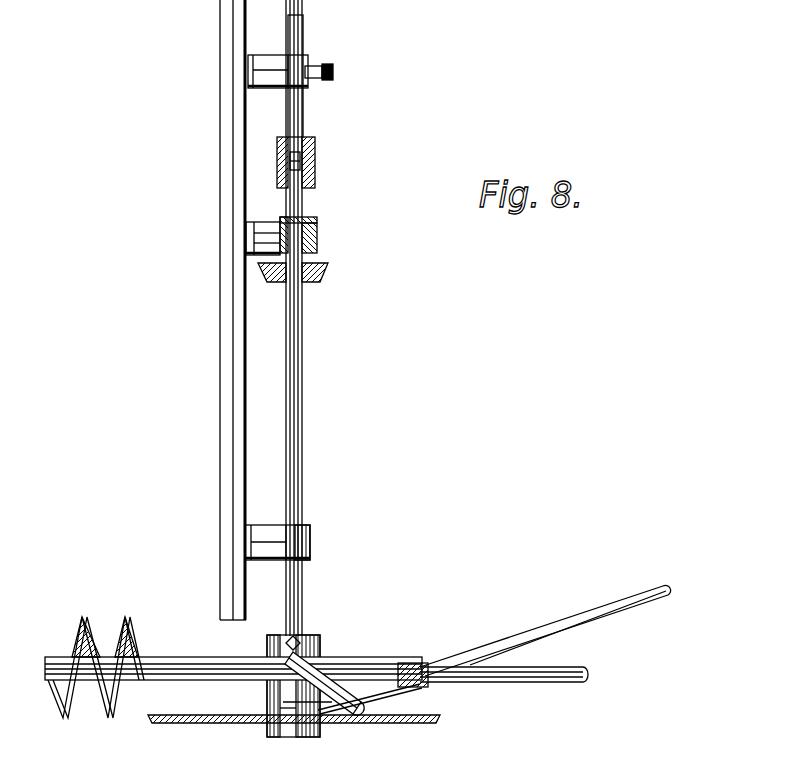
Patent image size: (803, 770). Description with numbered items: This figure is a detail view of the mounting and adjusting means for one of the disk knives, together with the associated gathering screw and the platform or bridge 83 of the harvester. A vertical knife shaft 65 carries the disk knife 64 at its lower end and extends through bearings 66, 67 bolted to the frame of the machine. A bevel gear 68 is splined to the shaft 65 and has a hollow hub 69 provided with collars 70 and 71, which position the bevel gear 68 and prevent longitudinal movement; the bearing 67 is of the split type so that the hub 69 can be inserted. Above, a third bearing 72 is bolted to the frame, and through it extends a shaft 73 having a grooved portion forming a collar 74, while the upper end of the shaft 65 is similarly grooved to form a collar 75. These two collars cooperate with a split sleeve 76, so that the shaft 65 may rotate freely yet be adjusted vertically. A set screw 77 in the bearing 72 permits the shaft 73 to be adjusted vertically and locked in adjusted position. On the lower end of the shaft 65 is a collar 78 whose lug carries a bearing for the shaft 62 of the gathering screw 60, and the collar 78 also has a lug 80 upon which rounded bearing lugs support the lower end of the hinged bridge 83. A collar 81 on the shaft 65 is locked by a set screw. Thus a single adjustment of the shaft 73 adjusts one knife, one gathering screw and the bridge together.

The gathering screw 60 is at (75, 641).
The shaft 62 is at (545, 681).
The disk knife 64 is at (248, 724).
The knife shaft 65 is at (314, 318).
The bearing 66 is at (312, 538).
The bearing 67 is at (317, 238).
The bevel gear 68 is at (320, 277).
The hollow hub 69 is at (317, 253).
The collar 70 is at (278, 280).
The collar 71 is at (308, 220).
The third bearing 72 is at (305, 54).
The shaft 73 is at (310, 103).
The collar 74 is at (315, 150).
The collar 75 is at (313, 177).
The split sleeve 76 is at (315, 162).
The set screw 77 is at (337, 72).
The collar 78 is at (268, 661).
The lug 80 is at (338, 690).
The collar 81 is at (311, 633).
The platform or bridge 83 is at (565, 623).